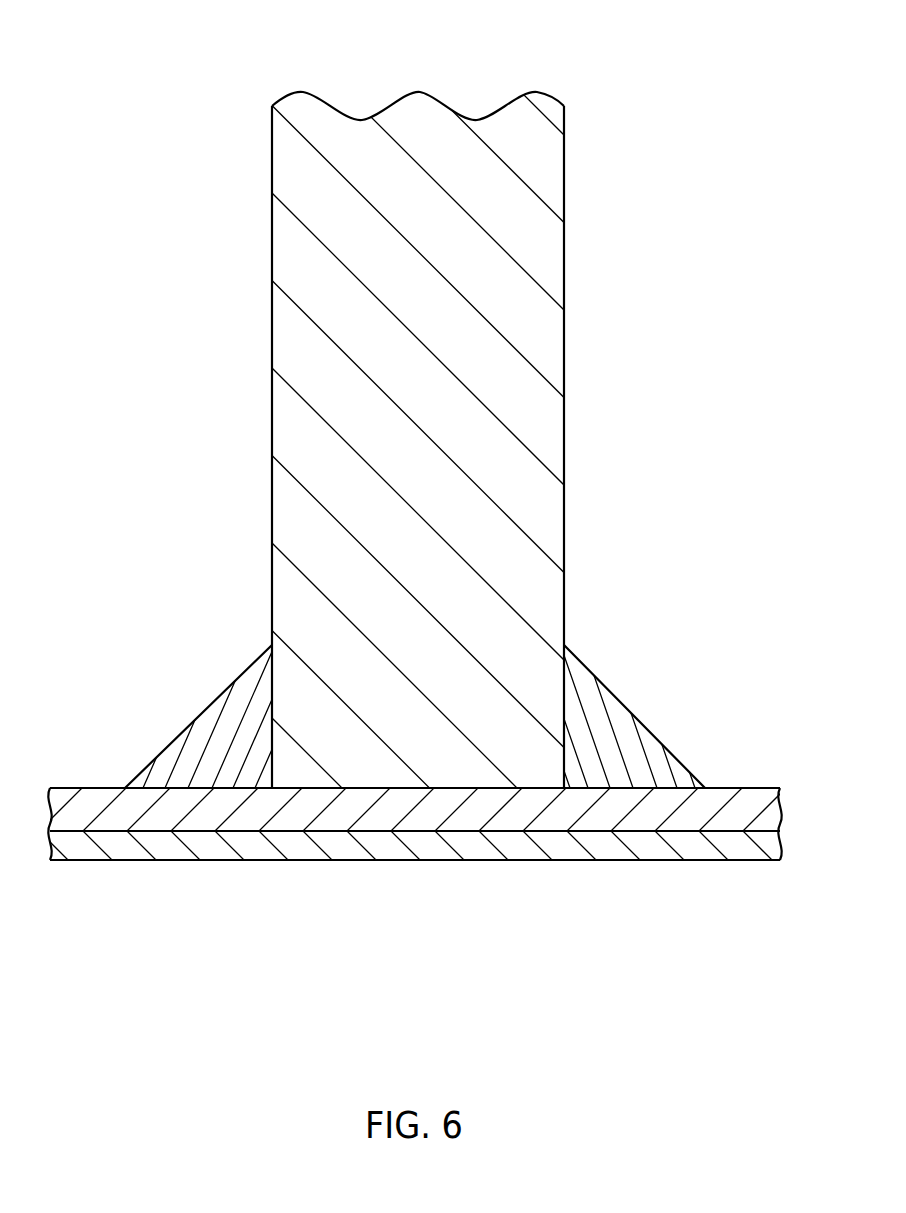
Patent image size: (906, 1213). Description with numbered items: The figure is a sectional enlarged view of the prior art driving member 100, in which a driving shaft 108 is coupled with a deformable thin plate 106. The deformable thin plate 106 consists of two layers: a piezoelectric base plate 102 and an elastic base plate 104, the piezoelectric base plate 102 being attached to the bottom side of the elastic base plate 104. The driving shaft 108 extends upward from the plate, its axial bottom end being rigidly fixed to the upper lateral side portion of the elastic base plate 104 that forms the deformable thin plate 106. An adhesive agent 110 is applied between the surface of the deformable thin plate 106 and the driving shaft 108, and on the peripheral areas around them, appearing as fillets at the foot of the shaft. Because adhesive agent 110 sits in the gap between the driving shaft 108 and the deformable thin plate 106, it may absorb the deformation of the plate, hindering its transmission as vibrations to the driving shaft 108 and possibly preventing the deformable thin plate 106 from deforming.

The driving member 100 is at (208, 152).
The piezoelectric base plate 102 is at (743, 847).
The elastic base plate 104 is at (732, 813).
The deformable thin plate 106 is at (785, 986).
The driving shaft 108 is at (287, 280).
The adhesive agent 110 is at (587, 718).